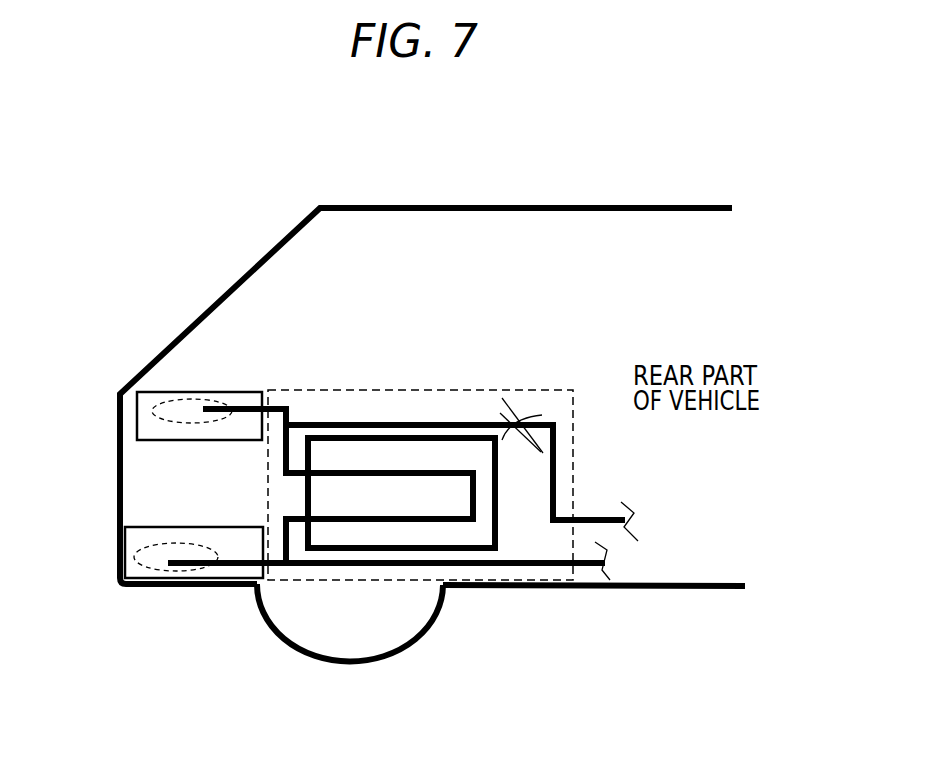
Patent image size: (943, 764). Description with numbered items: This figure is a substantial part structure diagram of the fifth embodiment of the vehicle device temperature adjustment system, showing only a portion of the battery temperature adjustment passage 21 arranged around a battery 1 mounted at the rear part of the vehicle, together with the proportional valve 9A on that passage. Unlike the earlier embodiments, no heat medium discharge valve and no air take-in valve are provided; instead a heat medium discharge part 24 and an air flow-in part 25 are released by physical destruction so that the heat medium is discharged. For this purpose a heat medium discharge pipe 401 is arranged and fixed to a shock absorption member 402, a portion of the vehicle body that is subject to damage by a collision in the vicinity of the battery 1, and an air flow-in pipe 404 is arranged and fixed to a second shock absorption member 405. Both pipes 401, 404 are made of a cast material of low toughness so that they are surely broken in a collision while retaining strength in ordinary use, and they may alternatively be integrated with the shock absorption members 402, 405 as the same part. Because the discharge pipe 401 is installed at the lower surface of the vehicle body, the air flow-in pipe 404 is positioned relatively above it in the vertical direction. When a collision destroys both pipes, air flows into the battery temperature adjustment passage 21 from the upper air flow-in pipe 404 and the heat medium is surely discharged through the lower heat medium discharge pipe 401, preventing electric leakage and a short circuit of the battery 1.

The battery 1 is at (472, 548).
The proportional valve 9A is at (527, 413).
The battery temperature adjustment passage 21 is at (390, 580).
The heat medium discharge part 24 is at (172, 567).
The air flow-in part 25 is at (197, 400).
The heat medium discharge pipe 401 is at (218, 555).
The shock absorption member 402 is at (158, 527).
The air flow-in pipe 404 is at (243, 403).
The shock absorption member 405 is at (177, 393).